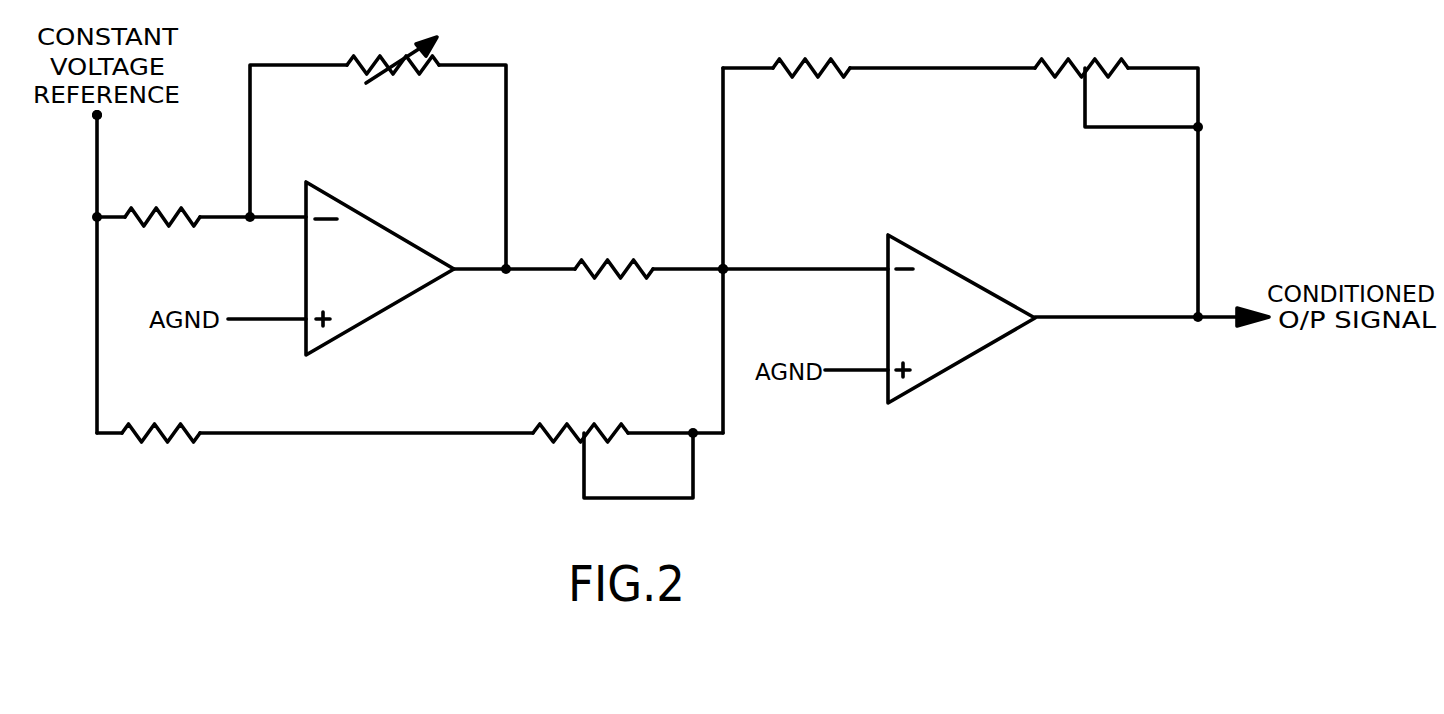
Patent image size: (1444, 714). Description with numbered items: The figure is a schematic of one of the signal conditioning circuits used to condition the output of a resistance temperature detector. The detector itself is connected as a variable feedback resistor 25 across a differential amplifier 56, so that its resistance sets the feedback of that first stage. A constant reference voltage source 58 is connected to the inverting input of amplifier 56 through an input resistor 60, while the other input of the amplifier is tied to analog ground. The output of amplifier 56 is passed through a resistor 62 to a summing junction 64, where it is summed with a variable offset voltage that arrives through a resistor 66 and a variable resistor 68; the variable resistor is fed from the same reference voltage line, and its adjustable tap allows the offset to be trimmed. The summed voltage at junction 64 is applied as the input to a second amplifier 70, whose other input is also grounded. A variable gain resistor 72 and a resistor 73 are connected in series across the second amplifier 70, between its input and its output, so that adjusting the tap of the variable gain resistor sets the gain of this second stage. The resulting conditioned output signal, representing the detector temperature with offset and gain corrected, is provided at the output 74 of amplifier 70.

The variable gain resistor 25 is at (388, 63).
The differential amplifier 56 is at (398, 228).
The reference voltage source 58 is at (104, 115).
The input resistor 60 is at (170, 214).
The resistor 62 is at (618, 261).
The junction 64 is at (727, 265).
The resistor 66 is at (175, 428).
The variable resistor 68 is at (575, 428).
The second amplifier 70 is at (975, 281).
The variable gain resistor 72 is at (1100, 65).
The resistor 73 is at (813, 62).
The output 74 is at (1262, 322).